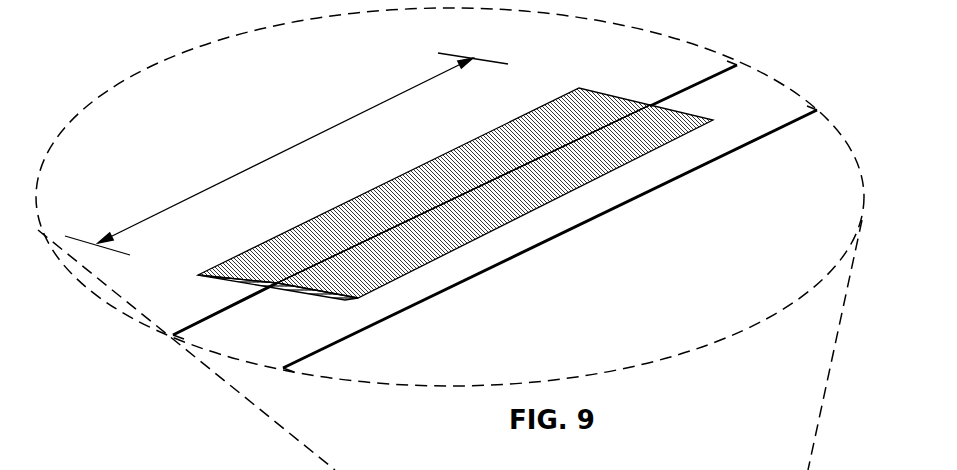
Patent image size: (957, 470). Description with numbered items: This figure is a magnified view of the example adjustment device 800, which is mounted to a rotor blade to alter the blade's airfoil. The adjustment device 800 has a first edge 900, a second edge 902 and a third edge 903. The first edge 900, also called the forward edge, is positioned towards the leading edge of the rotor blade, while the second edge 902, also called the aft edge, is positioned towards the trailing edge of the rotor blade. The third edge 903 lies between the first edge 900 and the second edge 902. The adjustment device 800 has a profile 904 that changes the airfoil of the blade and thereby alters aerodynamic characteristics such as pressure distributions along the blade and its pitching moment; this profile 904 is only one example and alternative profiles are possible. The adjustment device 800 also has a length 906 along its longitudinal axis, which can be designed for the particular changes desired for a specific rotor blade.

The adjustment device 800 is at (558, 97).
The first edge 900 is at (438, 156).
The second edge 902 is at (555, 203).
The third edge 903 is at (352, 238).
The profile 904 is at (274, 285).
The length 906 is at (312, 138).